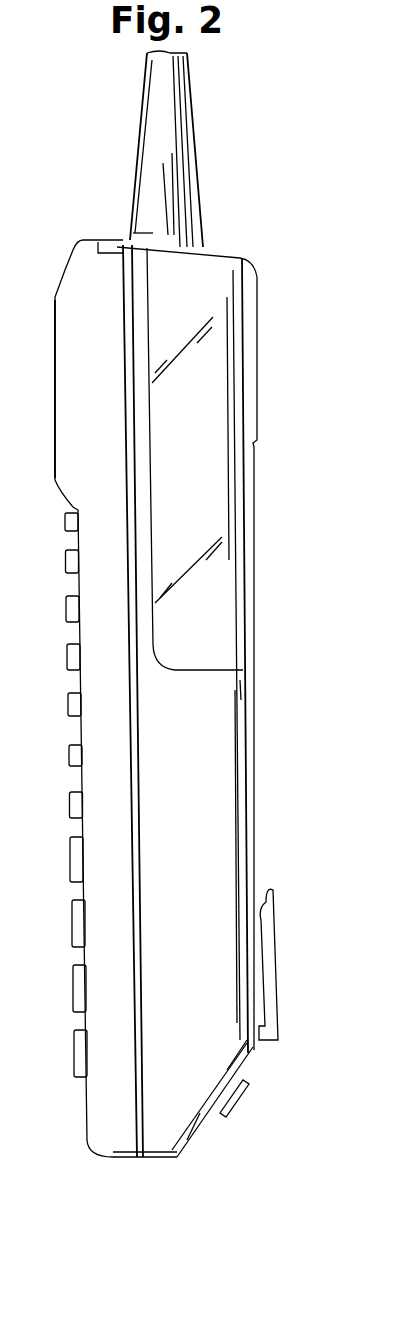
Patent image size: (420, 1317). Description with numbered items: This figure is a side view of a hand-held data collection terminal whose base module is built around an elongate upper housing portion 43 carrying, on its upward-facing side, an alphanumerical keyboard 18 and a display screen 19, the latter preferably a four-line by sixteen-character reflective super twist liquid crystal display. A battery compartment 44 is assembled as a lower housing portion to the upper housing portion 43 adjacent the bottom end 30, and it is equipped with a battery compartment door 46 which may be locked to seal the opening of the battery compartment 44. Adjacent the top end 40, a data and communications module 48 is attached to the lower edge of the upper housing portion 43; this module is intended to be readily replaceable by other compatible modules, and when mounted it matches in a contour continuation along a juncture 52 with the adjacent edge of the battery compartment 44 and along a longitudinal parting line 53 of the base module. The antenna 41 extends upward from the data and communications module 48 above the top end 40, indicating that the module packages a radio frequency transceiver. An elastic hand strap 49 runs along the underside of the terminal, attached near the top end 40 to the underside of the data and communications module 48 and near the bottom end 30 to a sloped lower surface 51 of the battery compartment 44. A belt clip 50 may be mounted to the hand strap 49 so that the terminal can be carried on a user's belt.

The alphanumerical keyboard 18 is at (82, 827).
The display screen 19 is at (57, 395).
The bottom end 30 is at (182, 1160).
The top end 40 is at (112, 231).
The antenna 41 is at (197, 143).
The upper housing portion 43 is at (93, 725).
The battery compartment 44 is at (235, 815).
The battery compartment door 46 is at (242, 742).
The data and communications module 48 is at (203, 281).
The elastic hand strap 49 is at (257, 528).
The belt clip 50 is at (273, 993).
The sloped lower surface 51 is at (212, 1120).
The juncture 52 is at (217, 670).
The longitudinal parting line 53 is at (137, 640).